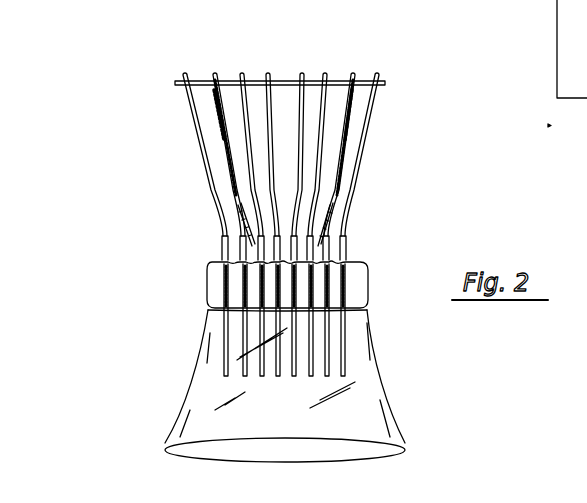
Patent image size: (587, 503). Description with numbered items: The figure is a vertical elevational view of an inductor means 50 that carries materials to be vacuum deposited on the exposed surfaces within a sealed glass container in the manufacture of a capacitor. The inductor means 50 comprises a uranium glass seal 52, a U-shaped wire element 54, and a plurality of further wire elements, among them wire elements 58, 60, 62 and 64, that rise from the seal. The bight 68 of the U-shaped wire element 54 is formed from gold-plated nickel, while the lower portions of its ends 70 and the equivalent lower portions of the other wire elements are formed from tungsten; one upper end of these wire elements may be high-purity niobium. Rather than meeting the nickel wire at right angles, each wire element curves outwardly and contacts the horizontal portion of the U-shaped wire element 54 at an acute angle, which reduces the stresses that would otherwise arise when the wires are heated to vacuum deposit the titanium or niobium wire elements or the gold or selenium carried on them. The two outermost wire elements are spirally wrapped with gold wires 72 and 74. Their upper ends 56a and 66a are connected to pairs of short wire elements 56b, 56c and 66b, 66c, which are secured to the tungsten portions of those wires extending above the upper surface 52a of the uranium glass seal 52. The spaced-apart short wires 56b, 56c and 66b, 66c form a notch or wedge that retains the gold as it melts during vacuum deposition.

The inductor means 50 is at (114, 198).
The uranium glass seal 52 is at (368, 315).
The upper surface of the uranium glass seal 52a is at (212, 262).
The U-shaped wire element 54 is at (376, 88).
The upper end of wire element 56 56a is at (234, 197).
The short wire element 56b is at (238, 246).
The short wire element 56c is at (226, 287).
The wire element 58 is at (252, 170).
The wire element 60 is at (270, 148).
The wire element 62 is at (318, 170).
The wire element 64 is at (334, 183).
The upper end of wire element 66 66a is at (345, 187).
The short wire element 66b is at (333, 249).
The short wire element 66c is at (346, 272).
The bight of the U-shaped wire element 68 is at (184, 89).
The ends of the U-shaped wire element 70 is at (216, 302).
The gold wire 72 is at (223, 121).
The gold wire 74 is at (346, 127).